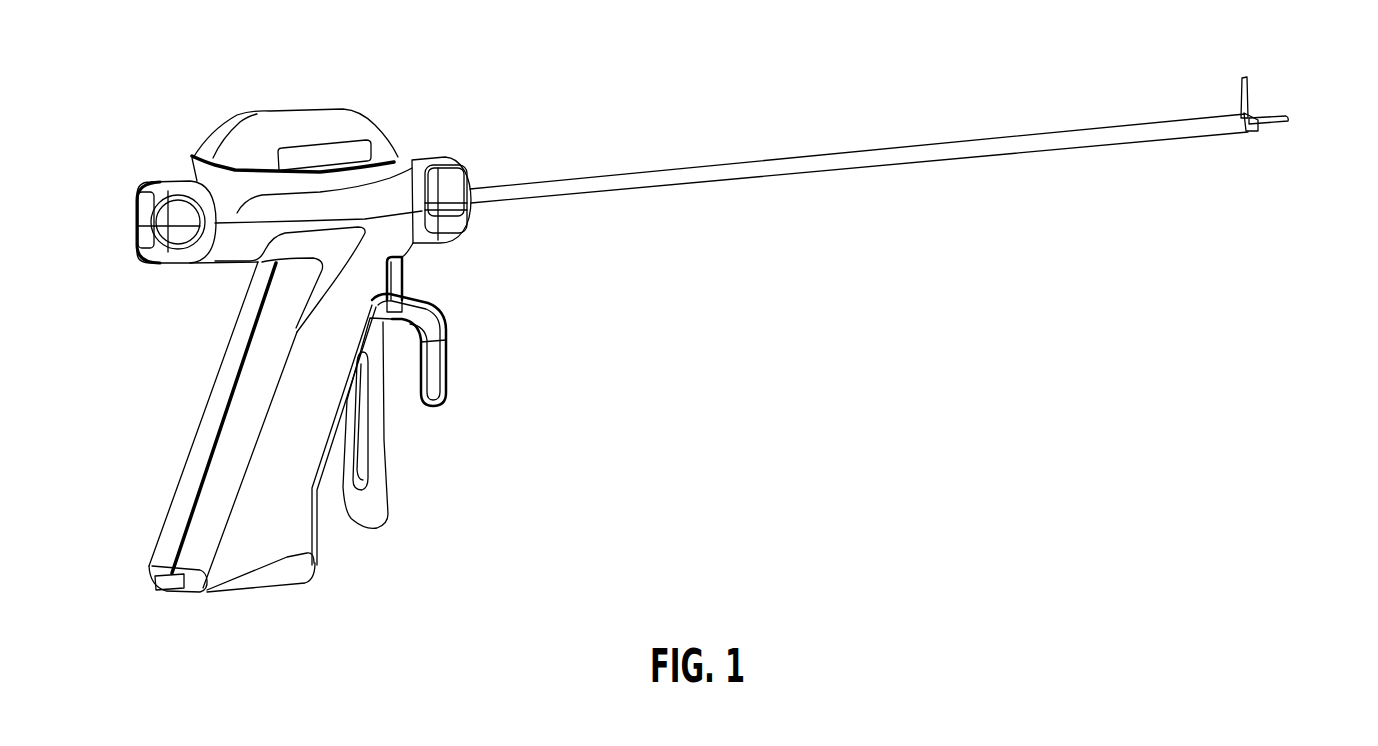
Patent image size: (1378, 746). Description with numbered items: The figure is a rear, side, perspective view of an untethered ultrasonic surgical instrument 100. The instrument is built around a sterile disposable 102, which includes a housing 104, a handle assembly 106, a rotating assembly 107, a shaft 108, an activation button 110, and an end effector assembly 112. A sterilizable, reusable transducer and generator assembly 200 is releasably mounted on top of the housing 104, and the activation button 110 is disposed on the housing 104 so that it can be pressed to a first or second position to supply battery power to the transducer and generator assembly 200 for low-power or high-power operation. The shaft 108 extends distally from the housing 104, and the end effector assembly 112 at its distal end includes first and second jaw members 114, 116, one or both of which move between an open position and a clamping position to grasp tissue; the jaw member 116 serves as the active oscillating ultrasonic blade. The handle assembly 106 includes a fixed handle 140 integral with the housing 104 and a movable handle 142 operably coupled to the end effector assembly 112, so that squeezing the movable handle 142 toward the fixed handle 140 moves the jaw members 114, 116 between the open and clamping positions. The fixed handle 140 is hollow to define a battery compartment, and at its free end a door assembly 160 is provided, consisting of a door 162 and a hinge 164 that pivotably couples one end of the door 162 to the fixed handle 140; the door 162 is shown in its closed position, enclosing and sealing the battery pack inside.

The untethered ultrasonic surgical instrument 100 is at (735, 63).
The sterile disposable 102 is at (216, 310).
The housing 104 is at (400, 182).
The handle assembly 106 is at (412, 530).
The rotating assembly 107 is at (465, 218).
The shaft 108 is at (893, 156).
The activation button 110 is at (407, 276).
The end effector assembly 112 is at (1290, 64).
The first jaw member 114 is at (1250, 86).
The second jaw member 116 is at (1285, 120).
The fixed handle 140 is at (203, 412).
The movable handle 142 is at (363, 453).
The door assembly 160 is at (183, 609).
The door 162 is at (263, 590).
The hinge 164 is at (163, 589).
The transducer and generator assembly 200 is at (277, 125).